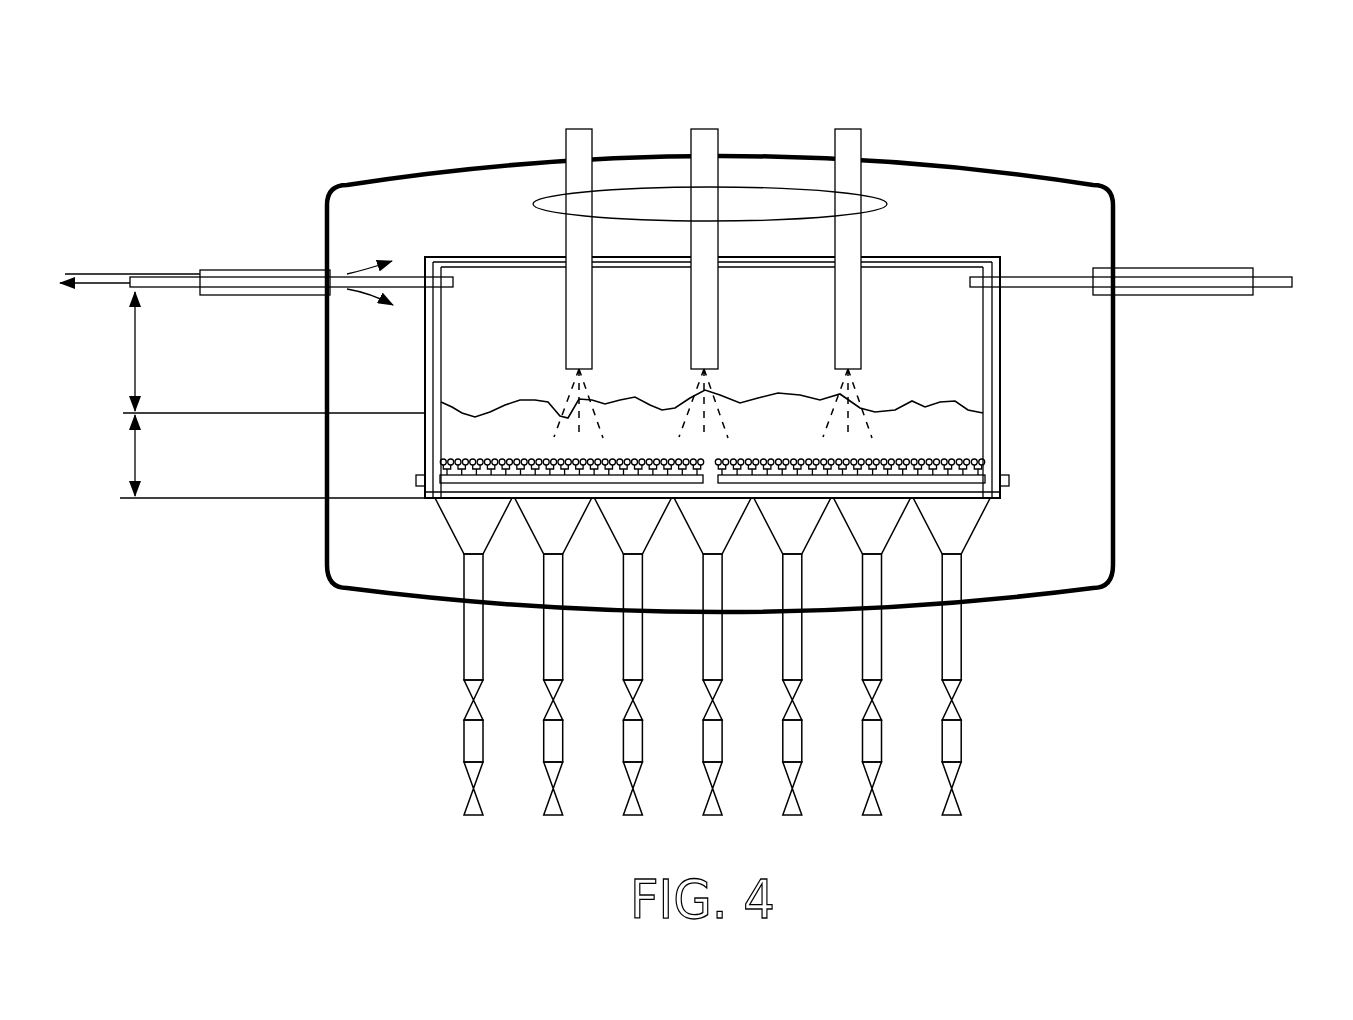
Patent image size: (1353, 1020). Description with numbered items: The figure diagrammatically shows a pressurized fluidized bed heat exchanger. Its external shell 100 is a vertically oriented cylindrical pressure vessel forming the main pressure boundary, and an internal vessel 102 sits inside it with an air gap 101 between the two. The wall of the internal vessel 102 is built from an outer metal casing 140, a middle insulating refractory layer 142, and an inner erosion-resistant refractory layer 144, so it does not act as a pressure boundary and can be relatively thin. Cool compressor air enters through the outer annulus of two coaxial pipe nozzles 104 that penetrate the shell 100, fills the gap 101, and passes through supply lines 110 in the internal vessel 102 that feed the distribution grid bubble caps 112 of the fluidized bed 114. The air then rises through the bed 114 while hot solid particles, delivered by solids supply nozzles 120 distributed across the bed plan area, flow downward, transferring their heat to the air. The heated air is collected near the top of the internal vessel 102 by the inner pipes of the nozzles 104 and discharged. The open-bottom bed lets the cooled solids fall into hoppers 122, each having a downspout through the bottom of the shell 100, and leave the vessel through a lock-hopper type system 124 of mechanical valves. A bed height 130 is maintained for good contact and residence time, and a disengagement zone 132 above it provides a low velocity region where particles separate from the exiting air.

The external shell 100 is at (327, 562).
The air gap 101 is at (387, 228).
The internal vessel 102 is at (493, 250).
The nozzles 104 is at (296, 292).
The supply lines 110 is at (410, 477).
The distribution grid bubble caps 112 is at (515, 460).
The fluidized bed 114 is at (652, 405).
The solids supply nozzles 120 is at (535, 203).
The hoppers 122 is at (438, 518).
The lock-hopper type system 124 is at (463, 757).
The bed height 130 is at (135, 450).
The disengagement zone 132 is at (135, 343).
The outer metal casing 140 is at (1003, 312).
The middle insulating refractory layer 142 is at (998, 389).
The inner erosion-resistant refractory layer 144 is at (990, 452).